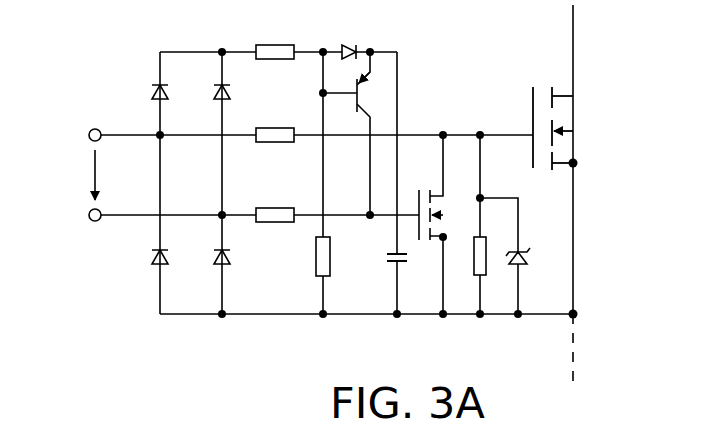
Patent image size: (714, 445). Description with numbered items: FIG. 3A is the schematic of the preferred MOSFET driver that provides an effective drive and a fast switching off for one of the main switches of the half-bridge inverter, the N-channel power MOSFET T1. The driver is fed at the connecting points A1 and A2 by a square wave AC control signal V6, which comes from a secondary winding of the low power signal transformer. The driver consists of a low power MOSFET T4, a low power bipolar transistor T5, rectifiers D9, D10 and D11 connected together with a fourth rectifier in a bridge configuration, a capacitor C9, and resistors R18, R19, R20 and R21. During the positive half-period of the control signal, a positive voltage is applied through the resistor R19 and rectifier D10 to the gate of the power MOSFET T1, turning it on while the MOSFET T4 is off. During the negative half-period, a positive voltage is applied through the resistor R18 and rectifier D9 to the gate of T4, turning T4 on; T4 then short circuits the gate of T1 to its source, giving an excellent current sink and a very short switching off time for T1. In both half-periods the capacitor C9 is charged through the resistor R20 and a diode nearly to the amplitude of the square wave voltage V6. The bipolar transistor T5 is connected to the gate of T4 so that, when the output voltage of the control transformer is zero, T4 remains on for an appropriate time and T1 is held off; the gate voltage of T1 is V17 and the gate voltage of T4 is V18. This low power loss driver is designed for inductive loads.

The connecting point A1 is at (95, 229).
The connecting point A2 is at (95, 125).
The square wave AC control signal V6 is at (76, 175).
The gate voltage of T1 V17 is at (497, 131).
The gate voltage of T4 V18 is at (353, 211).
The rectifier D9 is at (146, 259).
The rectifier D10 is at (241, 259).
The rectifier D11 is at (241, 94).
The resistor R18 is at (275, 205).
The resistor R19 is at (275, 125).
The resistor R20 is at (275, 41).
The resistor R21 is at (342, 256).
The capacitor C9 is at (408, 267).
The N-channel power MOSFET T1 is at (553, 111).
The low power MOSFET T4 is at (443, 224).
The low power bipolar transistor T5 is at (359, 133).